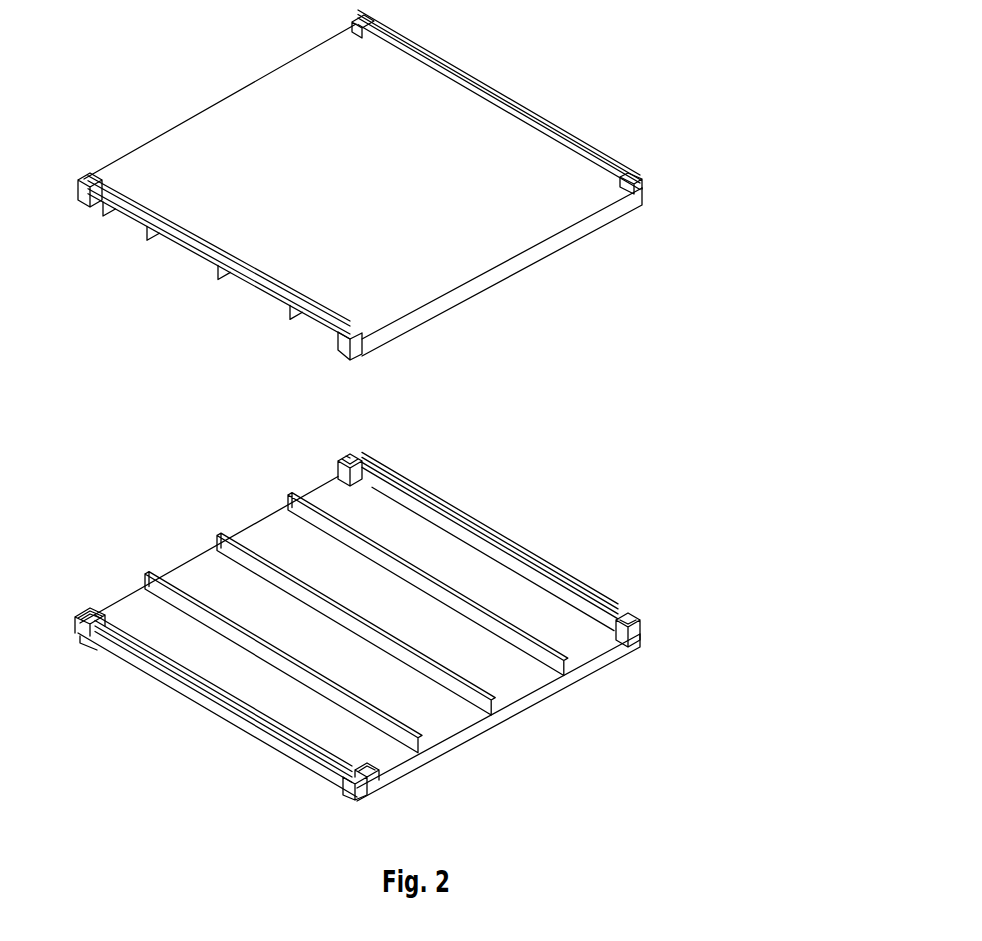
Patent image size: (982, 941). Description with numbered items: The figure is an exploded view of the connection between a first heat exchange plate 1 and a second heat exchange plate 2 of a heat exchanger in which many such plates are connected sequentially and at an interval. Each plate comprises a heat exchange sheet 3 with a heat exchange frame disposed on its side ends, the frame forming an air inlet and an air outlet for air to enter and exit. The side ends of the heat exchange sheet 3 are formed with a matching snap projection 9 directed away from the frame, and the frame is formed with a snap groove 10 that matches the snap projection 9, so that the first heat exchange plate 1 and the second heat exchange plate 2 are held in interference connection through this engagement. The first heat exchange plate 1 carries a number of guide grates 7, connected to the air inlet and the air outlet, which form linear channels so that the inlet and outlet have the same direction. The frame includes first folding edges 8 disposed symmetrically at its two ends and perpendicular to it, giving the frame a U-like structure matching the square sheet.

The first heat exchange plate 1 is at (478, 72).
The second heat exchange plate 2 is at (518, 740).
The heat exchange sheet 3 is at (263, 117).
The guide grates 7 is at (217, 277).
The first folding edge 8 is at (362, 465).
The snap projection 9 is at (535, 114).
The snap groove 10 is at (577, 582).